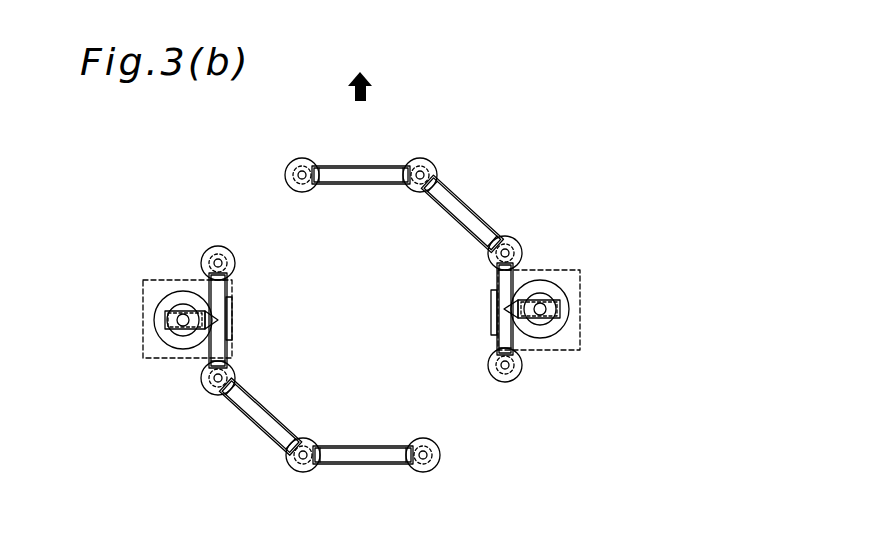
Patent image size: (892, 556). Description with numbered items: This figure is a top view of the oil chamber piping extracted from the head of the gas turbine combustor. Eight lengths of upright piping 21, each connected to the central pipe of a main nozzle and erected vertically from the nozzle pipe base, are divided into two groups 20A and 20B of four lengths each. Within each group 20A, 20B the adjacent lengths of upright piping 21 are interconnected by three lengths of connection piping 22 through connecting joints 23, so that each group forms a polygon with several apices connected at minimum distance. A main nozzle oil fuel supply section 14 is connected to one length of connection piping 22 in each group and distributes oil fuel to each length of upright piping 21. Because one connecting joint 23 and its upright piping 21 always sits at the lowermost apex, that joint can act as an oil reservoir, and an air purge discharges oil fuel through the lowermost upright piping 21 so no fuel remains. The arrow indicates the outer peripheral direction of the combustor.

The main nozzle oil fuel supply section 14 is at (143, 328).
The oil chamber piping group 20A is at (523, 140).
The oil chamber piping group 20B is at (185, 458).
The upright piping 21 is at (290, 181).
The connection piping 22 is at (357, 165).
The connecting joint 23 is at (291, 160).